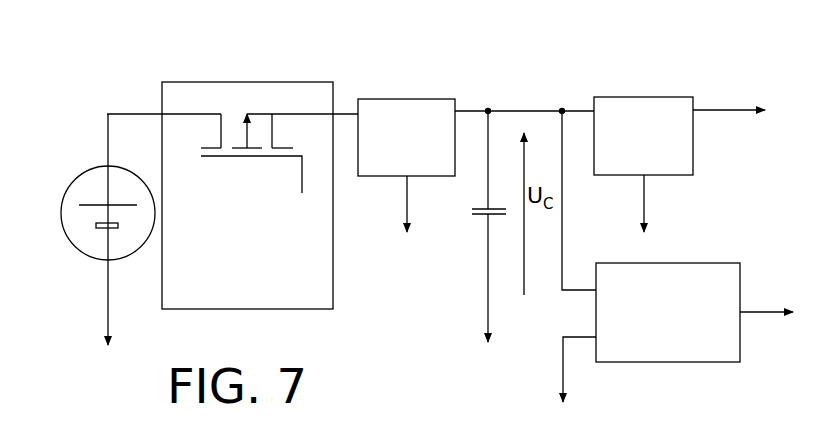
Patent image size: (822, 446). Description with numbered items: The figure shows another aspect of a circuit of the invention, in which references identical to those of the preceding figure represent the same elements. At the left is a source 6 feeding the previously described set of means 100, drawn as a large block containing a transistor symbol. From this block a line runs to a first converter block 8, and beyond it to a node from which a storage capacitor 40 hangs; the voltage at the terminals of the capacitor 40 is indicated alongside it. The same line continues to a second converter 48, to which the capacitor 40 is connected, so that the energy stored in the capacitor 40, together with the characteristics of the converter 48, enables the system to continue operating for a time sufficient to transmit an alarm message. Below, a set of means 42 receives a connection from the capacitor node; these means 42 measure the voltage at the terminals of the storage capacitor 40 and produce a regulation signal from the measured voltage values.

The voltage source / battery 6 is at (78, 176).
The set of means 100 is at (248, 82).
The DC/DC converter 8 is at (406, 99).
The storage capacitor 40 is at (478, 216).
The converter 48 is at (644, 97).
The set of means 42 is at (667, 263).